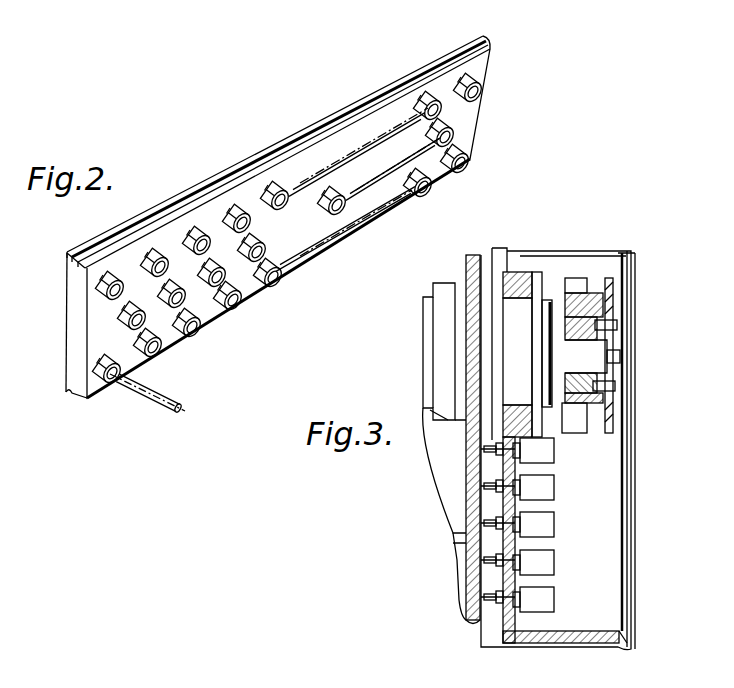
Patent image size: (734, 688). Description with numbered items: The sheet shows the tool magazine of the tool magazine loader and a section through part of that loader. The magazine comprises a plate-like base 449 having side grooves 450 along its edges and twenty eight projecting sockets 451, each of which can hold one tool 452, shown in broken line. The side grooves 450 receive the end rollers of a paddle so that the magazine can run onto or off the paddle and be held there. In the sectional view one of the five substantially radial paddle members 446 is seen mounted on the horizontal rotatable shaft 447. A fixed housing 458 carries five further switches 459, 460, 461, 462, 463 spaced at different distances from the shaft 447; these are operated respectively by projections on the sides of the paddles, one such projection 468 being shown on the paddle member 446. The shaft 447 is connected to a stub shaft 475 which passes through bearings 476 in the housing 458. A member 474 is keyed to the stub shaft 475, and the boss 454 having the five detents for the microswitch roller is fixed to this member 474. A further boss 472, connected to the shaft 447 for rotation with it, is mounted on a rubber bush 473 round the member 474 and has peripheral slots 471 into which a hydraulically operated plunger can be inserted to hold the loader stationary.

In FIG. 2, the plate-like base 449 is at (88, 312).
In FIG. 2, the side grooves 450 is at (104, 250).
In FIG. 2, the projecting sockets 451 is at (236, 247).
In FIG. 2, the tool 452 is at (158, 391).
In FIG. 3, the paddle member 446 is at (467, 560).
In FIG. 3, the horizontal rotatable shaft 447 is at (432, 331).
In FIG. 3, the boss 454 is at (611, 302).
In FIG. 3, the fixed housing 458 is at (508, 630).
In FIG. 3, the further switch 459 is at (544, 453).
In FIG. 3, the further switch 460 is at (544, 489).
In FIG. 3, the further switch 461 is at (544, 528).
In FIG. 3, the further switch 462 is at (544, 557).
In FIG. 3, the further switch 463 is at (544, 598).
In FIG. 3, the projection 468 is at (484, 597).
In FIG. 3, the peripheral slots 471 is at (580, 283).
In FIG. 3, the boss 472 is at (576, 427).
In FIG. 3, the rubber bush 473 is at (604, 399).
In FIG. 3, the member 474 is at (615, 336).
In FIG. 3, the stub shaft 475 is at (610, 375).
In FIG. 3, the bearings 476 is at (495, 355).